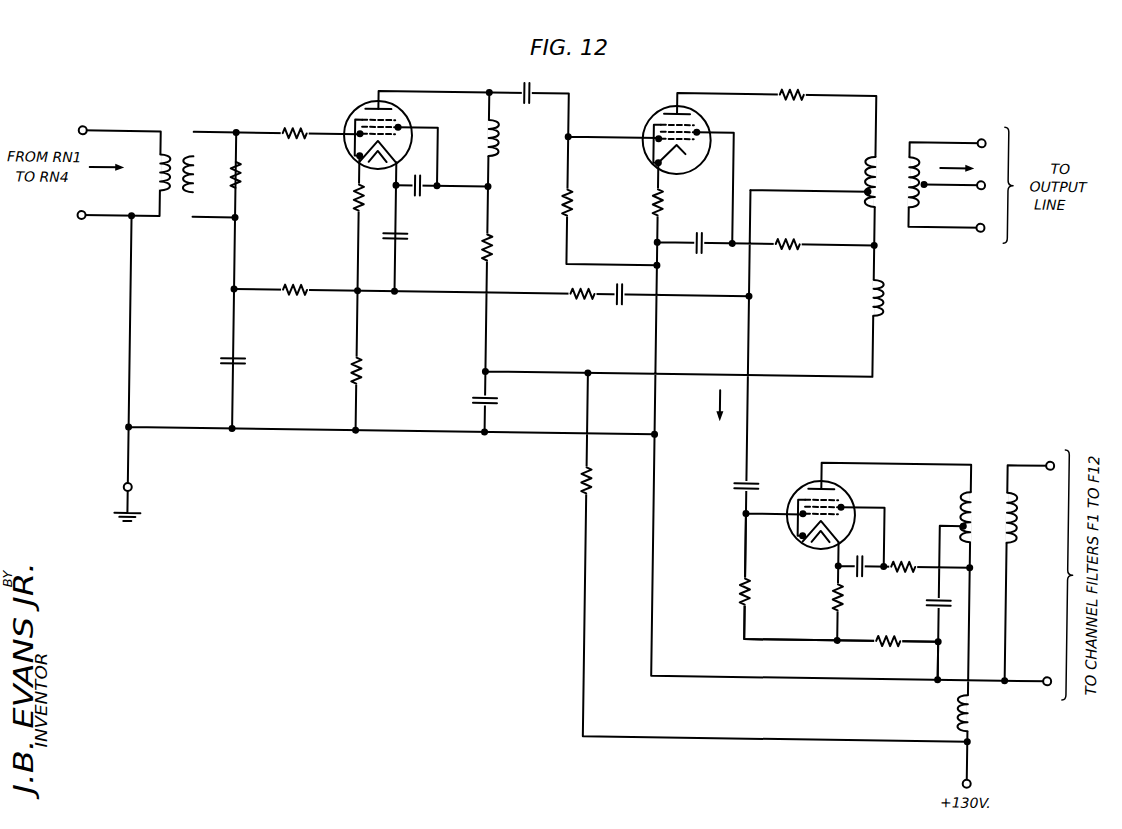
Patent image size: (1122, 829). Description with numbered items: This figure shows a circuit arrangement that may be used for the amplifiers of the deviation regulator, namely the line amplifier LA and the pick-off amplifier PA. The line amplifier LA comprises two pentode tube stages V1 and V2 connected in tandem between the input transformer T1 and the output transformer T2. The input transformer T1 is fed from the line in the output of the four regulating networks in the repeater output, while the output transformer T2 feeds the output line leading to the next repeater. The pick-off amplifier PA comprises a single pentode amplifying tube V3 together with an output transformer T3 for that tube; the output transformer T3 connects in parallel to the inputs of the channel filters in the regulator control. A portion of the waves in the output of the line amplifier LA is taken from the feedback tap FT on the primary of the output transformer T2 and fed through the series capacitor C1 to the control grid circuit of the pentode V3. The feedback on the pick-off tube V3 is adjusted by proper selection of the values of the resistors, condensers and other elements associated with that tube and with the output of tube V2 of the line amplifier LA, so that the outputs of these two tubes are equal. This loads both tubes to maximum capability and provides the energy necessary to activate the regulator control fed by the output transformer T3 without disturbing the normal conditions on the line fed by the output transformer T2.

The input transformer T1 is at (174, 148).
The pentode tube stage V1 is at (353, 110).
The pentode tube stage V2 is at (660, 106).
The output transformer T2 is at (892, 142).
The feedback tap FT is at (770, 187).
The pentode amplifying tube V3 is at (852, 493).
The series capacitor C1 is at (736, 481).
The output transformer T3 is at (993, 470).
The line amplifier LA is at (342, 281).
The pick-off amplifier PA is at (844, 616).